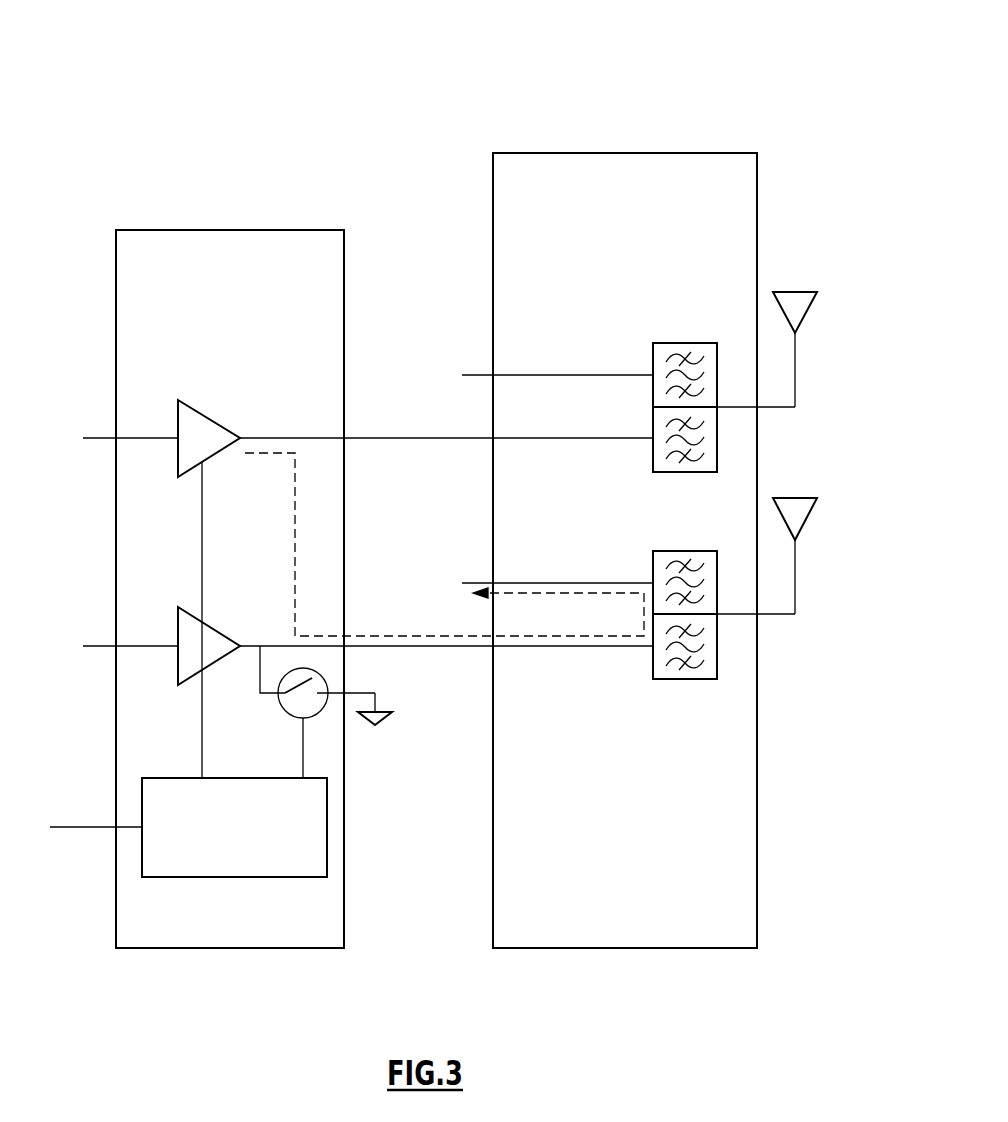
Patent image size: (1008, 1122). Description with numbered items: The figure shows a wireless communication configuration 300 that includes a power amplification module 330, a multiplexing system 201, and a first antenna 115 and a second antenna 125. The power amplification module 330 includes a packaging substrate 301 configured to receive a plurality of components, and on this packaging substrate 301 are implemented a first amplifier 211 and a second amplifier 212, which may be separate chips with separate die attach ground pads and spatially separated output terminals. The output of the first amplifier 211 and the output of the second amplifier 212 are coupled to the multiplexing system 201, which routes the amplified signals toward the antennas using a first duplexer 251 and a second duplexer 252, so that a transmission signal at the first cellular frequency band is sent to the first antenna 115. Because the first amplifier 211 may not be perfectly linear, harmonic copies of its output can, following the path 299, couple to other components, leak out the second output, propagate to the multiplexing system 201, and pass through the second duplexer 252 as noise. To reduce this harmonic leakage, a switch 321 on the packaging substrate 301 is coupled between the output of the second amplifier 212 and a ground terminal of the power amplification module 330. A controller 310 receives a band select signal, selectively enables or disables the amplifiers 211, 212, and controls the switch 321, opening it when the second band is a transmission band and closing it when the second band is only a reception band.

The wireless communication configuration 300 is at (522, 55).
The multiplexing system 201 is at (641, 153).
The power amplification module 330 is at (258, 230).
The packaging substrate 301 is at (137, 306).
The first amplifier 211 is at (205, 412).
The second amplifier 212 is at (217, 625).
The first duplexer 251 is at (687, 343).
The second duplexer 252 is at (687, 551).
The first antenna 115 is at (803, 318).
The second antenna 125 is at (803, 523).
The path 299 is at (376, 636).
The switch 321 is at (290, 719).
The controller 310 is at (208, 877).